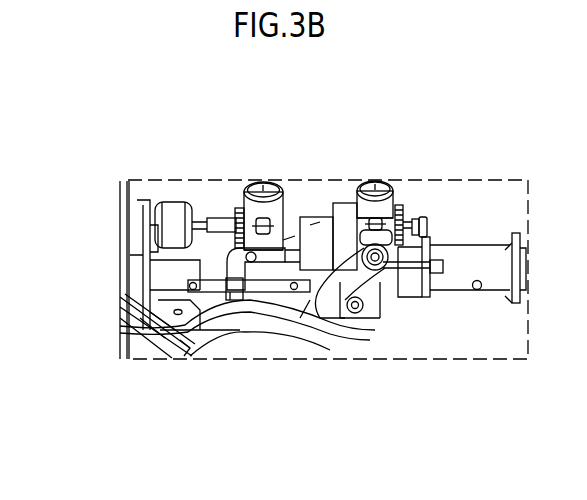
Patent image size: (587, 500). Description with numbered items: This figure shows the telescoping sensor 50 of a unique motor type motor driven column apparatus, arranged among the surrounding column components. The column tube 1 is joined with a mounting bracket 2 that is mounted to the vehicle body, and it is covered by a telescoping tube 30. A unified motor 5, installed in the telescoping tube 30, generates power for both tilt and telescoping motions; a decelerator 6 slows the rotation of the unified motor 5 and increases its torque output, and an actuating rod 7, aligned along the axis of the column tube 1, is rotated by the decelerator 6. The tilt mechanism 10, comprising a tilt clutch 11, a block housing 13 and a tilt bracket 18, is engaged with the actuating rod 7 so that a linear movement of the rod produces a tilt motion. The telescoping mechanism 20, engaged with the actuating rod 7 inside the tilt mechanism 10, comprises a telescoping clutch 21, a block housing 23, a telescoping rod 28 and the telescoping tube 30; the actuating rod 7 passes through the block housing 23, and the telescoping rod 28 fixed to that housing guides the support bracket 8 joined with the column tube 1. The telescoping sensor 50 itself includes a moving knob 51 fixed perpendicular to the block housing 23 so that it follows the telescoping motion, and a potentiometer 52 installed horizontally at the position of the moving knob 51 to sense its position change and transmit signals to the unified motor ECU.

The column tube 1 is at (460, 277).
The mounting bracket 2 is at (155, 342).
The unified motor 5 is at (228, 207).
The decelerator 6 is at (163, 213).
The actuating rod 7 is at (215, 217).
The support bracket 8 is at (420, 300).
The tilt mechanism 10 is at (494, 110).
The tilt clutch 11 is at (375, 181).
The block housing 13 is at (388, 230).
The tilt bracket 18 is at (353, 297).
The telescoping mechanism 20 is at (341, 110).
The telescoping clutch 21 is at (268, 190).
The block housing 23 is at (297, 205).
The telescoping rod 28 is at (302, 262).
The telescoping tube 30 is at (177, 263).
The telescoping sensor 50 is at (276, 433).
The moving knob 51 is at (222, 292).
The potentiometer 52 is at (253, 290).